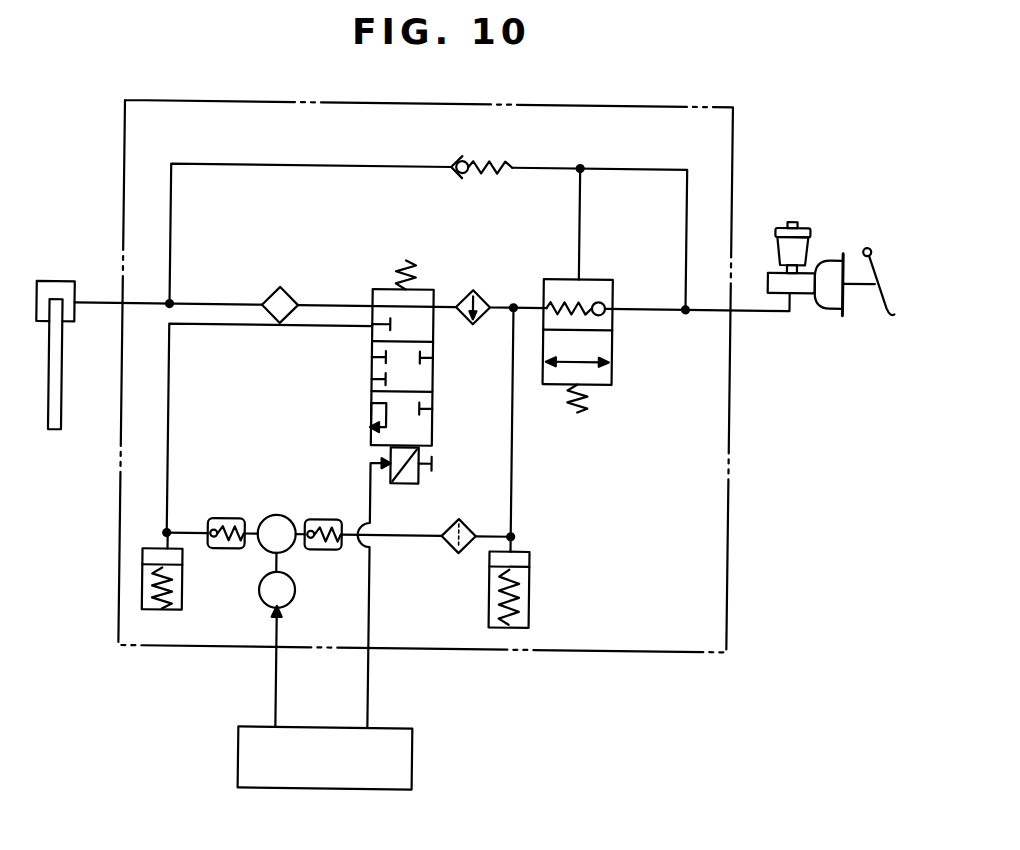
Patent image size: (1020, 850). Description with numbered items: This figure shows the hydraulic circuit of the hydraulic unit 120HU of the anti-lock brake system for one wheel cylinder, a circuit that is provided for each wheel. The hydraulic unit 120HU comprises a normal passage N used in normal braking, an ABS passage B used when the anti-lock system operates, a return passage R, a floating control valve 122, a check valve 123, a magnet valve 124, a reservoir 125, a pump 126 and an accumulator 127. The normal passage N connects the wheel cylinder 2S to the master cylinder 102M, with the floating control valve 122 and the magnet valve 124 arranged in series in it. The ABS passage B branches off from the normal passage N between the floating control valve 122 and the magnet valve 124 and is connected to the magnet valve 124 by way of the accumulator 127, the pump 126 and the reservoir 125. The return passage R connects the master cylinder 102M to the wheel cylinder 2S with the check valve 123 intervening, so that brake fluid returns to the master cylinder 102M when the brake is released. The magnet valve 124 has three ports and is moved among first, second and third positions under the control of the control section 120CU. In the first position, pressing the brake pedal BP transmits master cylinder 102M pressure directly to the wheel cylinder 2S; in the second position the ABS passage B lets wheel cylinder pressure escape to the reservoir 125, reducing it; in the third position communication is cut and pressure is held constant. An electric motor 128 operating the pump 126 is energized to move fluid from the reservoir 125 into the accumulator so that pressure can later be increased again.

The stroke sensor 2S is at (77, 280).
The normal passage N is at (222, 292).
The return passage R is at (381, 158).
The ABS passage B is at (180, 459).
The check valve 123 is at (484, 158).
The magnet valve 124 is at (375, 365).
The floating control valve 122 is at (641, 334).
The pump 126 is at (288, 511).
The electric motor 128 is at (301, 587).
The reservoir 125 is at (188, 589).
The accumulator 127 is at (535, 587).
The hydraulic unit 120HU is at (548, 645).
The control section 120CU is at (420, 762).
The master cylinder 102M is at (805, 285).
The brake pedal BP is at (872, 240).